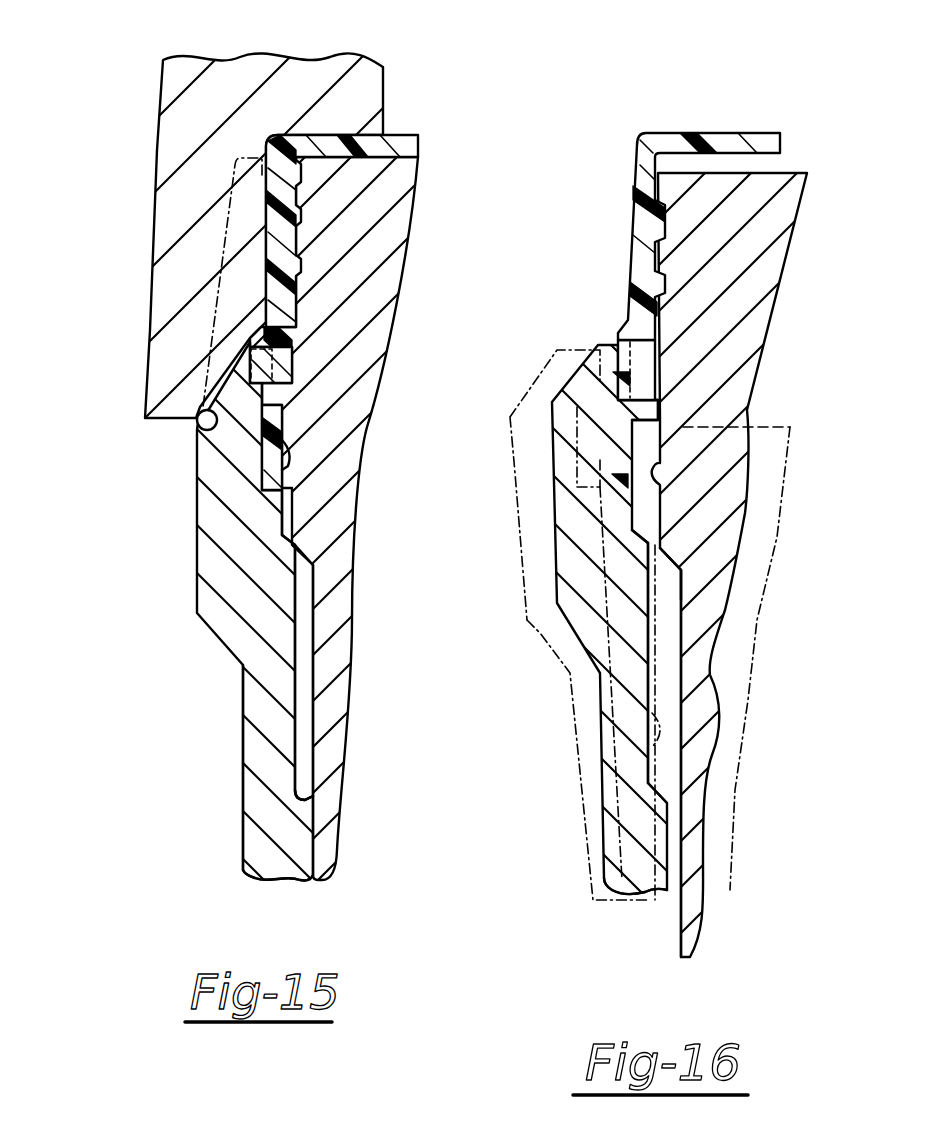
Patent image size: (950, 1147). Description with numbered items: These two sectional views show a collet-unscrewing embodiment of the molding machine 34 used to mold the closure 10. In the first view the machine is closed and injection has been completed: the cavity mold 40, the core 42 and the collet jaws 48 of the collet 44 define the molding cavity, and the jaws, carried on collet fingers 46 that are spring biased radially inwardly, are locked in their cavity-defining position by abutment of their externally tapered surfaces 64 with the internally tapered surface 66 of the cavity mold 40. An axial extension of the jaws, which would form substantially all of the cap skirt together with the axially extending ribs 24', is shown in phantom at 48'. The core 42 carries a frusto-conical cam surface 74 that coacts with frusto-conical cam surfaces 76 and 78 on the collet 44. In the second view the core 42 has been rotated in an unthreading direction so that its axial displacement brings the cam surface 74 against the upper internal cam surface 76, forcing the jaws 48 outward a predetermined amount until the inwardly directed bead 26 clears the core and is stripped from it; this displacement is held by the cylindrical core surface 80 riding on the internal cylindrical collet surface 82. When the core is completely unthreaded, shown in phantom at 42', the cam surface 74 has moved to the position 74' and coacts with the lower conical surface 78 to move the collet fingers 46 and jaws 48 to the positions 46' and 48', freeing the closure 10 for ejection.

In FIG. 15, the closure 10 is at (401, 131).
In FIG. 16, the closure 10 is at (721, 128).
In FIG. 15, the seal lip 24' is at (186, 250).
In FIG. 16, the bead 26 is at (690, 421).
In FIG. 15, the molding machine 34 is at (132, 411).
In FIG. 15, the cavity mold 40 is at (360, 82).
In FIG. 15, the core 42 is at (335, 495).
In FIG. 16, the core 42 is at (754, 536).
In FIG. 16, the core phantom position 42' is at (782, 658).
In FIG. 15, the collet 44 is at (273, 813).
In FIG. 16, the collet 44 is at (641, 827).
In FIG. 15, the collet fingers 46 is at (197, 767).
In FIG. 16, the collet fingers 46 is at (589, 628).
In FIG. 16, the collet fingers position 46' is at (579, 766).
In FIG. 15, the collet jaws 48 is at (207, 583).
In FIG. 15, the collet jaws phantom position 48' is at (162, 282).
In FIG. 16, the collet jaws phantom position 48' is at (520, 485).
In FIG. 15, the externally tapered surfaces 64 is at (227, 370).
In FIG. 15, the internally tapered surface 66 is at (198, 430).
In FIG. 15, the frusto-conical cam surface 74 is at (209, 672).
In FIG. 16, the frusto-conical cam surface 74 is at (568, 750).
In FIG. 16, the cam surface position 74' is at (584, 722).
In FIG. 15, the upper internal frusto-conical cam surface 76 is at (292, 545).
In FIG. 16, the upper internal frusto-conical cam surface 76 is at (650, 540).
In FIG. 15, the lower conical surface 78 is at (305, 797).
In FIG. 16, the lower conical surface 78 is at (650, 772).
In FIG. 15, the cylindrical core surface 80 is at (280, 518).
In FIG. 16, the cylindrical core surface 80 is at (632, 512).
In FIG. 16, the internal cylindrical collet surface 82 is at (676, 566).